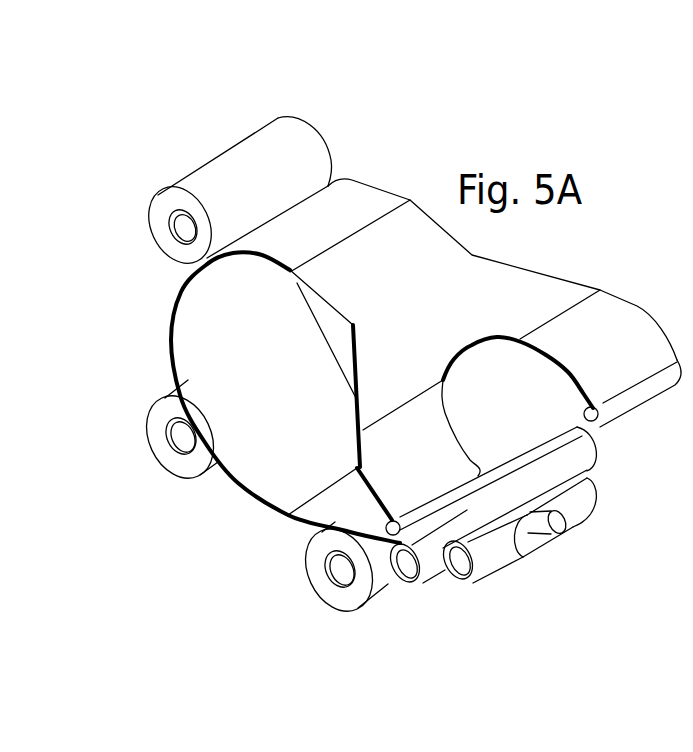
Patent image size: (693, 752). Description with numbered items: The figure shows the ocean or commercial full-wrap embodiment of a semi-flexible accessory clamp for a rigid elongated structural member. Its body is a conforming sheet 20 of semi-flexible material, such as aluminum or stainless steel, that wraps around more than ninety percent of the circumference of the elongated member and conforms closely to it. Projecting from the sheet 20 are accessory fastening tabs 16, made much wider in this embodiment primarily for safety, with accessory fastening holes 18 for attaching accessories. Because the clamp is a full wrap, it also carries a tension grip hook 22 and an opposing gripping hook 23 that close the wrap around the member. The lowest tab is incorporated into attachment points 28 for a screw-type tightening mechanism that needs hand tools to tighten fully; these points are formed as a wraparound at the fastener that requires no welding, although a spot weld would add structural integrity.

The accessory fastening tabs 16 is at (223, 185).
The accessory fastening holes 18 is at (180, 226).
The conforming sheet or sleeve 20 is at (255, 385).
The tension grip hook 22 is at (577, 452).
The gripping hook 23 is at (630, 400).
The attachment points for tightening mechanism 28 is at (455, 560).